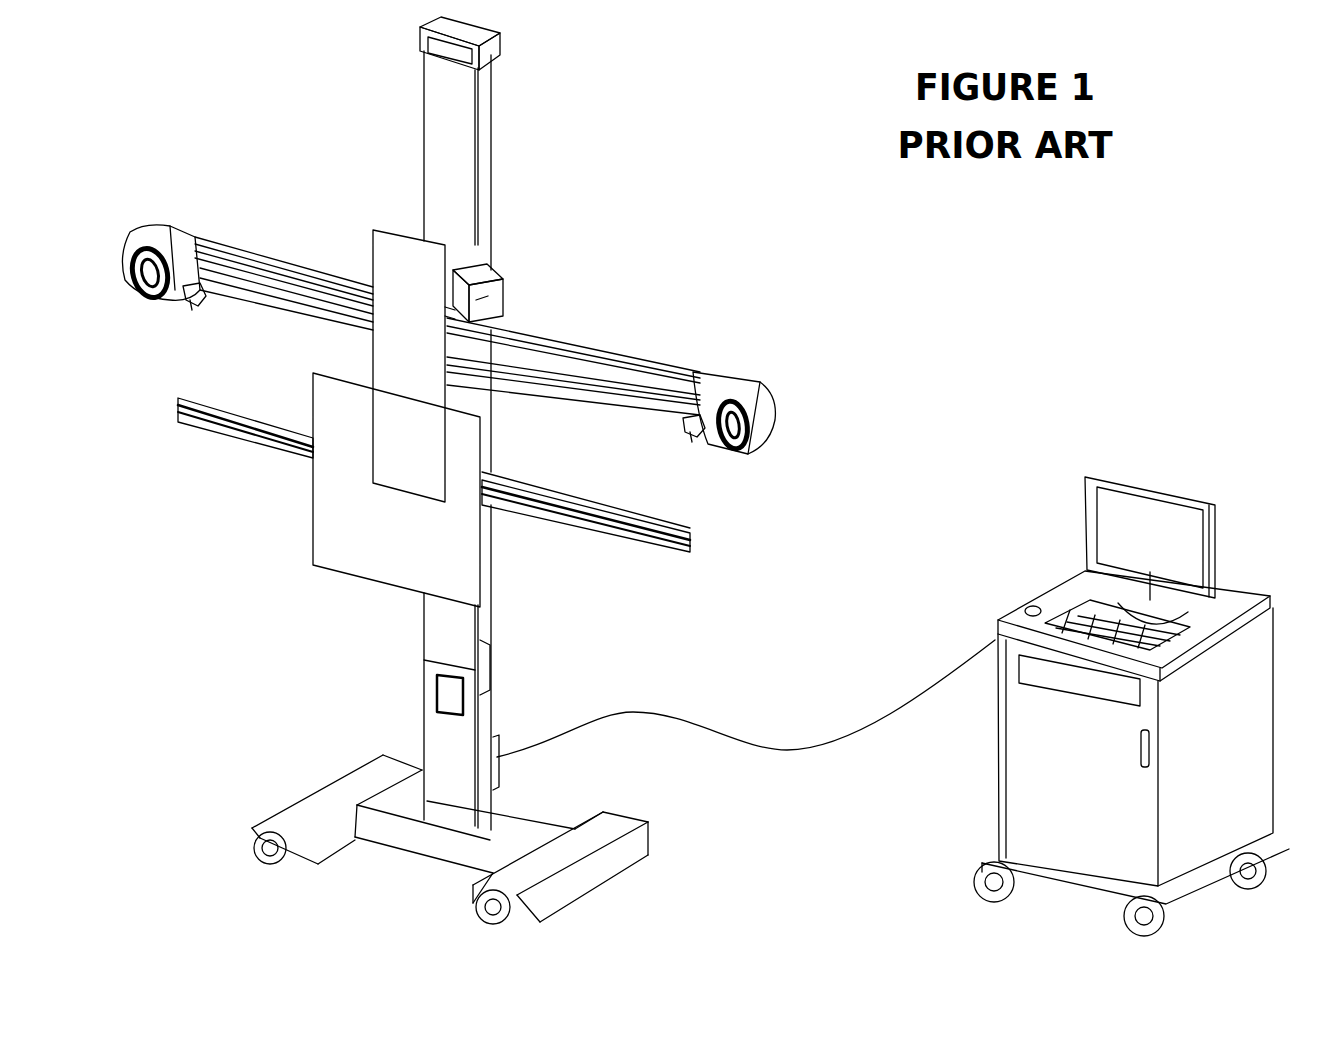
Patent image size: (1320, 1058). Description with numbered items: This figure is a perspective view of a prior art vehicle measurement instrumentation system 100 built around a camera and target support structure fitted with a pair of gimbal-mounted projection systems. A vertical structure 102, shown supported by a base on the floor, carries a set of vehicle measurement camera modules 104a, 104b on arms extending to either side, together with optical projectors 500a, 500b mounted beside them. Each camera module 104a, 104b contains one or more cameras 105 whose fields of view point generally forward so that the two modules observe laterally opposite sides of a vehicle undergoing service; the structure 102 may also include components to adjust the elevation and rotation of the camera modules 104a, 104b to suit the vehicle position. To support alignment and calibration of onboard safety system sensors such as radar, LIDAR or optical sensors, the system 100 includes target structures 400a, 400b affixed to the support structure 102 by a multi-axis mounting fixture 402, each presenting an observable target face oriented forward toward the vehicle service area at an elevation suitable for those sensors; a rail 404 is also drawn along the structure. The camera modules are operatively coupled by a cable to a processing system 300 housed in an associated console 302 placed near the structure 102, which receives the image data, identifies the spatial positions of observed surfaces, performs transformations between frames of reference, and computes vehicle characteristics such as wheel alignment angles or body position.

The vehicle measurement instrumentation system 100 is at (623, 519).
The structure 102 is at (402, 423).
The vehicle measurement camera module 104a is at (622, 386).
The vehicle measurement camera module 104b is at (288, 257).
The camera 105 is at (436, 374).
The processing system 300 is at (1053, 557).
The console 302 is at (1031, 753).
The target structure 400a is at (344, 490).
The target structure 400b is at (338, 366).
The multi-axis mounting fixture 402 is at (557, 268).
The rail 404 is at (586, 549).
The optical projector 500a is at (638, 444).
The optical projector 500b is at (245, 370).